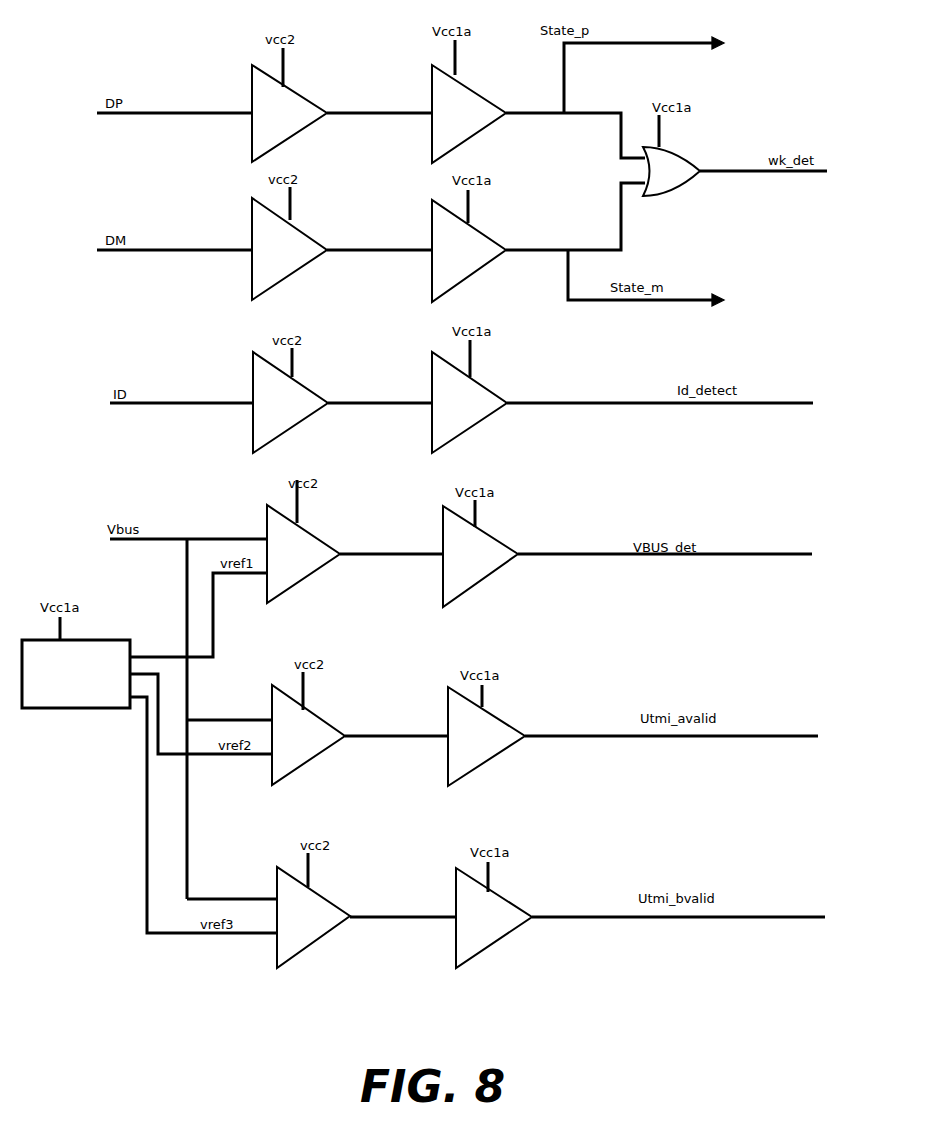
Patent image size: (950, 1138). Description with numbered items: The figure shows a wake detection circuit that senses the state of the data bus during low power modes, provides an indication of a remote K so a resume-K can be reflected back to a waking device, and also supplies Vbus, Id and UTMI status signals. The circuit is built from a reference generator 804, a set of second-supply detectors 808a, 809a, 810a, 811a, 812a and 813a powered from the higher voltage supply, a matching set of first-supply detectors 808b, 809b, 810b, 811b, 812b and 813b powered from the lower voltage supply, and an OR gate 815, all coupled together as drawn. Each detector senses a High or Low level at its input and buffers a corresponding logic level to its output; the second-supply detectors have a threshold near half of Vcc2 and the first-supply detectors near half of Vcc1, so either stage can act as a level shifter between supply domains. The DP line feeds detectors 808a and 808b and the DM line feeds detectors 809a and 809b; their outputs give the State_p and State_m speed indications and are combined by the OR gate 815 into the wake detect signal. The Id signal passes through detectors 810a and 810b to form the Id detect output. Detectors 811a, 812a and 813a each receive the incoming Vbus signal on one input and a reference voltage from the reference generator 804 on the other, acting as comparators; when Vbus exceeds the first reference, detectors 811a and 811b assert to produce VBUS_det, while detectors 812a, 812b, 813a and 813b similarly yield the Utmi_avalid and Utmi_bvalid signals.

The reference generator 804 is at (76, 674).
The second-supply detector 808a is at (289, 113).
The first-supply detector 808b is at (469, 114).
The second-supply detector 809a is at (289, 249).
The first-supply detector 809b is at (469, 251).
The second-supply detector 810a is at (290, 402).
The first-supply detector 810b is at (469, 402).
The second-supply detector 811a is at (303, 554).
The first-supply detector 811b is at (480, 556).
The second-supply detector 812a is at (308, 735).
The first-supply detector 812b is at (486, 736).
The second-supply detector 813a is at (313, 917).
The first-supply detector 813b is at (494, 918).
The OR gate 815 is at (671, 171).